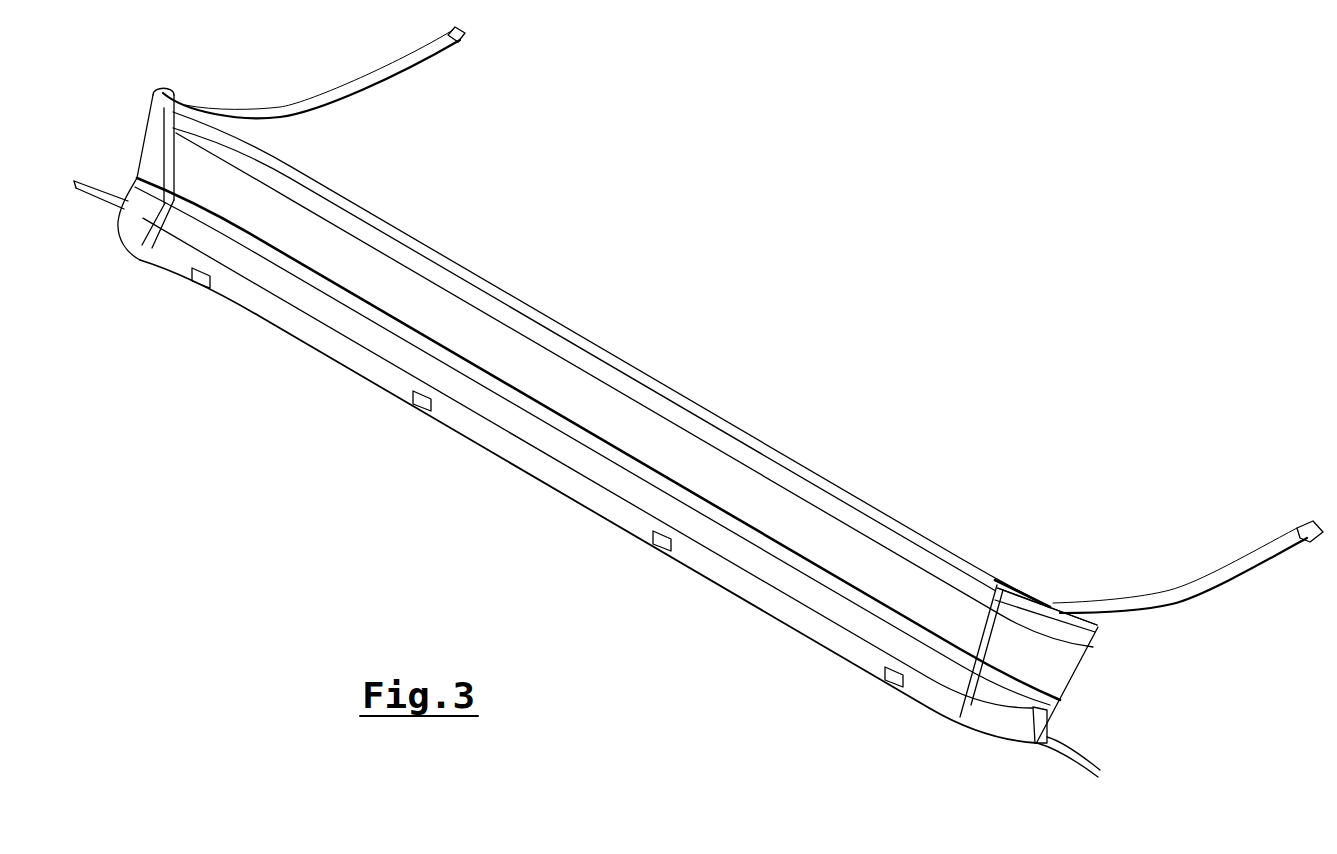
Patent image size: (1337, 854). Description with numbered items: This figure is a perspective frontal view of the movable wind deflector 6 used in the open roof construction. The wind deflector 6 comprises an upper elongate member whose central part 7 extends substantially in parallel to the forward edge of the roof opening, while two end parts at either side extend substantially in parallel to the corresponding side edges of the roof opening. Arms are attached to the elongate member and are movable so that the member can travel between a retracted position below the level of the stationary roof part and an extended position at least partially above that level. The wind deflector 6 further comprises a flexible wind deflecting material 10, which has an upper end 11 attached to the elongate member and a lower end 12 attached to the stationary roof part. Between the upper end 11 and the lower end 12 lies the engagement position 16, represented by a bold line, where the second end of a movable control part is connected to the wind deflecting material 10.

The wind deflector 6 is at (532, 308).
The central part 7 is at (635, 376).
The flexible wind deflecting material 10 is at (613, 417).
The upper end 11 is at (806, 483).
The lower end 12 is at (727, 584).
The engagement position 16 is at (508, 386).